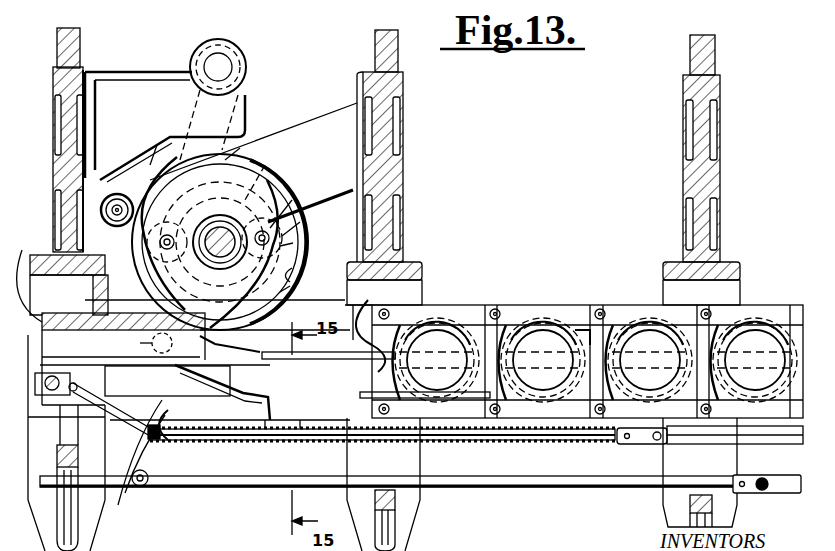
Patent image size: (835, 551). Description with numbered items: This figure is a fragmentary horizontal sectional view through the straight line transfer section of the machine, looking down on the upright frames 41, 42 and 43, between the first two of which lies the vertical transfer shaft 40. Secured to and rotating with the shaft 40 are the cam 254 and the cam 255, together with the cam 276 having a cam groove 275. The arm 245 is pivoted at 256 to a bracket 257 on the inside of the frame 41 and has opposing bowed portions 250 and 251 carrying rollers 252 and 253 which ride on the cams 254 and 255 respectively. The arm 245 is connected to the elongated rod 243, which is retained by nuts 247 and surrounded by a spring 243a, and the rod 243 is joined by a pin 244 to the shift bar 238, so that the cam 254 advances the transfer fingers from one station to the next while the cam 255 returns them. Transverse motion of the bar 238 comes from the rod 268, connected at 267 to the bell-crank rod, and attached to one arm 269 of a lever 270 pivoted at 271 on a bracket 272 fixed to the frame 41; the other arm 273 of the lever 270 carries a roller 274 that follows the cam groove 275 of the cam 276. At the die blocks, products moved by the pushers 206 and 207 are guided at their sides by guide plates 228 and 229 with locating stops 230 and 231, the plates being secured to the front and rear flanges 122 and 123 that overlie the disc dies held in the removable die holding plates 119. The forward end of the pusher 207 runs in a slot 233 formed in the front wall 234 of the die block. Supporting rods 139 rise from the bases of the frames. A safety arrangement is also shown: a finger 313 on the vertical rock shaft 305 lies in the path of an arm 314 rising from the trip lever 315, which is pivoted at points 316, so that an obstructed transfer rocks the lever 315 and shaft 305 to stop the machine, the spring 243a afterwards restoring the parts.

The frame 41 is at (83, 63).
The bracket 257 is at (163, 55).
The pivot 256 is at (232, 67).
The vertical shaft 40 is at (283, 182).
The roller 274 is at (268, 170).
The cam 276 is at (290, 200).
The roller 252 is at (300, 222).
The bowed portion 250 is at (293, 243).
The cam groove 275 is at (300, 268).
The arm 273 is at (290, 286).
The cam 255 is at (240, 148).
The bowed portion 251 is at (157, 143).
The roller 253 is at (120, 192).
The cam 254 is at (117, 307).
The bracket 272 is at (33, 276).
The frame 42 is at (400, 192).
The frame 43 is at (692, 188).
The slot 233 is at (362, 318).
The front wall 234 is at (420, 322).
The rear flange 123 is at (482, 312).
The guide plate 228 is at (527, 320).
The die holding plate 119 is at (583, 313).
The locating stop 230 is at (594, 320).
The product pusher 206 is at (288, 366).
The product pusher 207 is at (363, 372).
The arm 314 is at (149, 440).
The pivot 271 is at (137, 343).
The lever 270 is at (208, 345).
The finger 313 is at (97, 380).
The trip lever 315 is at (180, 370).
The rock shaft 305 is at (56, 396).
The supporting rod 139 is at (75, 532).
The nut 247 is at (124, 494).
The arm 245 is at (162, 438).
The arm 269 is at (148, 484).
The pivot point 316 is at (292, 442).
The front flange 122 is at (430, 440).
The guide plate 229 is at (532, 440).
The locating stop 231 is at (580, 395).
The rod 243 is at (595, 432).
The pin 244 is at (657, 442).
The shift bar 238 is at (787, 442).
The rod 268 is at (650, 488).
The connection 267 is at (762, 492).
The spring 243a is at (433, 468).